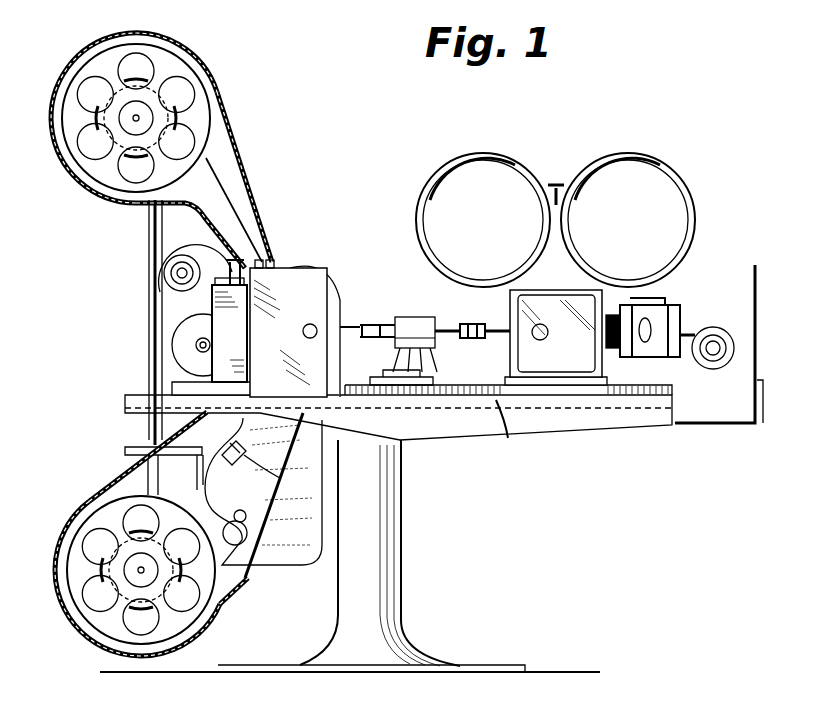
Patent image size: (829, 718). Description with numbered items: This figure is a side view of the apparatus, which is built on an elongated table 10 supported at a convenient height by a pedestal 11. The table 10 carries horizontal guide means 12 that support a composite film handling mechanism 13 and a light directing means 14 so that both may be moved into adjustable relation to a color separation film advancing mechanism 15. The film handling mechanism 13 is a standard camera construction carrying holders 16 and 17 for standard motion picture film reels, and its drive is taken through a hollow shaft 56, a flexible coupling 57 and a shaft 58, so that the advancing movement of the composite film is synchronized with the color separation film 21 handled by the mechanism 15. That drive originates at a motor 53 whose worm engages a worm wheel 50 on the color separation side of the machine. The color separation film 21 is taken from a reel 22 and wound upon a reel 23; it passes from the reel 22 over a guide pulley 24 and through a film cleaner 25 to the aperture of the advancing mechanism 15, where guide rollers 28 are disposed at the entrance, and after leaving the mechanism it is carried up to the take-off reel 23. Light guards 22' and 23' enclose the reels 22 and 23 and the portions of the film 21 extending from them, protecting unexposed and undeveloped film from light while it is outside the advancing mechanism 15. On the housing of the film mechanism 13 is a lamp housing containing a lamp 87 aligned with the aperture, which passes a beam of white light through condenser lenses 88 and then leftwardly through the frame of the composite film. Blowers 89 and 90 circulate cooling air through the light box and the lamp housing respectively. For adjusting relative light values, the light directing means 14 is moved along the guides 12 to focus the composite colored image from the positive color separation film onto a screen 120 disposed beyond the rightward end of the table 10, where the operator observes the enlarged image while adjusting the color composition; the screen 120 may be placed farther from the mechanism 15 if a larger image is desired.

The table 10 is at (440, 430).
The pedestal 11 is at (388, 575).
The horizontal guide means 12 is at (510, 433).
The composite film handling mechanism 13 is at (572, 313).
The light directing means 14 is at (402, 316).
The color separation film advancing mechanism 15 is at (287, 282).
The holder 16 is at (512, 178).
The holder 17 is at (630, 168).
The color separation film 21 is at (228, 520).
The reel 22 is at (152, 572).
The guard 22' is at (145, 534).
The reel 23 is at (144, 112).
The guard 23' is at (160, 118).
The guide pulley 24 is at (262, 542).
The film cleaner 25 is at (280, 478).
The guide rollers 28 is at (280, 447).
The worm wheel 50 is at (205, 318).
The motor 53 is at (178, 343).
The hollow shaft 56 is at (448, 326).
The flexible coupling 57 is at (463, 338).
The shaft 58 is at (494, 326).
The lamp 87 is at (650, 345).
The condenser lenses 88 is at (612, 350).
The blower 89 is at (170, 262).
The blower 90 is at (716, 326).
The screen 120 is at (748, 292).